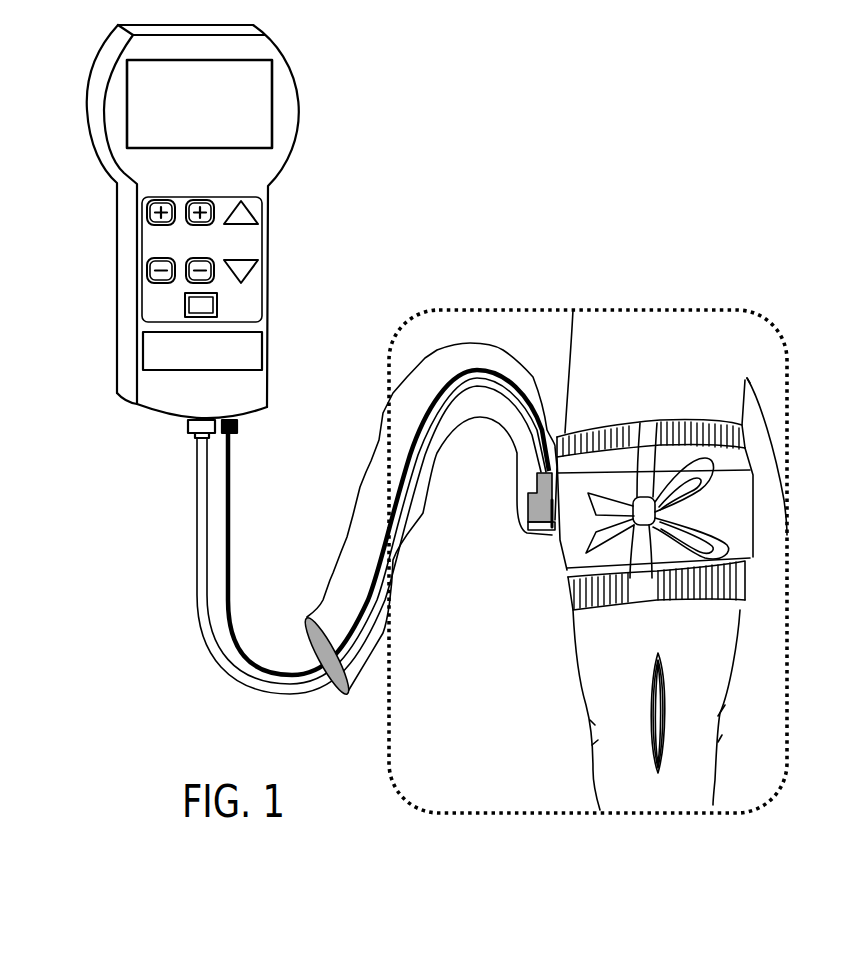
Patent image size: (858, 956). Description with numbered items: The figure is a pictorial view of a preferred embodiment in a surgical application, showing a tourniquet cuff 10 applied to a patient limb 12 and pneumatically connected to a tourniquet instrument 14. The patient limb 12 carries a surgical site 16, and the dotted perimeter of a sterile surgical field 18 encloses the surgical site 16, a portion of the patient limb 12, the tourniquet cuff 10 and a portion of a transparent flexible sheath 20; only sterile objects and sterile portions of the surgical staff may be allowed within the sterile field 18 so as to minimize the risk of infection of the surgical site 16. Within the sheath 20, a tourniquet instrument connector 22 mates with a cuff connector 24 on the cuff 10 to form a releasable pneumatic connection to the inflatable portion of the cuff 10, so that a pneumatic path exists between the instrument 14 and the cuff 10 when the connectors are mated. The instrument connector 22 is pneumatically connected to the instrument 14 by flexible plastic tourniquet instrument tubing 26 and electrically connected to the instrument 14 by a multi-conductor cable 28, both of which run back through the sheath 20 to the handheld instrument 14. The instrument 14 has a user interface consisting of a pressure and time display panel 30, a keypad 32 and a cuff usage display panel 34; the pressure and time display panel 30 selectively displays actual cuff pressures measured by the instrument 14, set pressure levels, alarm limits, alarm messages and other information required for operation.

The tourniquet cuff 10 is at (750, 557).
The patient limb 12 is at (737, 648).
The tourniquet instrument 14 is at (297, 86).
The surgical site 16 is at (668, 688).
The sterile surgical field 18 is at (663, 313).
The transparent flexible sheath 20 is at (463, 343).
The tourniquet instrument connector 22 is at (550, 535).
The cuff connector 24 is at (557, 541).
The tourniquet instrument tubing 26 is at (197, 496).
The multi-conductor cable 28 is at (230, 490).
The pressure and time display panel 30 is at (272, 140).
The keypad 32 is at (262, 241).
The cuff usage display panel 34 is at (262, 346).